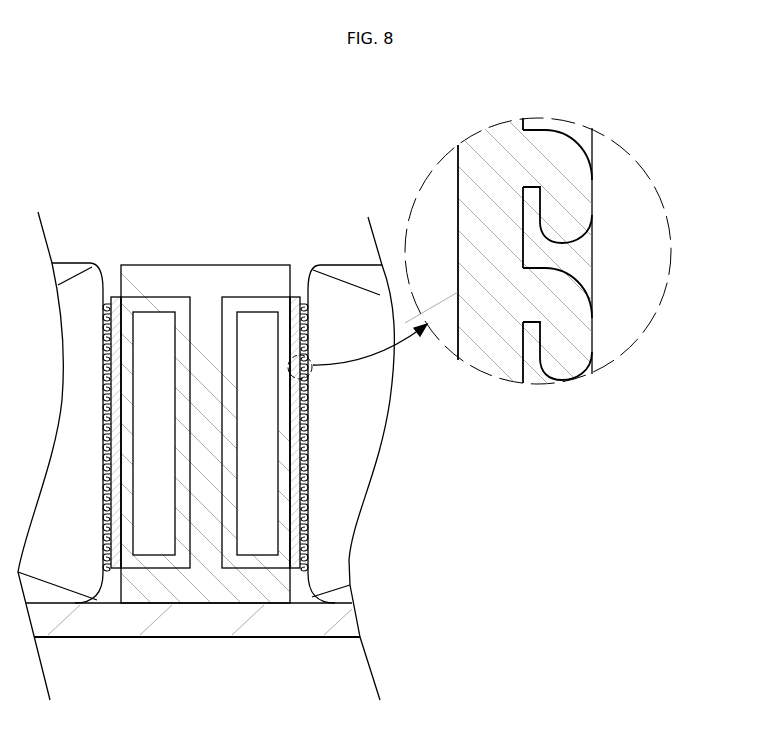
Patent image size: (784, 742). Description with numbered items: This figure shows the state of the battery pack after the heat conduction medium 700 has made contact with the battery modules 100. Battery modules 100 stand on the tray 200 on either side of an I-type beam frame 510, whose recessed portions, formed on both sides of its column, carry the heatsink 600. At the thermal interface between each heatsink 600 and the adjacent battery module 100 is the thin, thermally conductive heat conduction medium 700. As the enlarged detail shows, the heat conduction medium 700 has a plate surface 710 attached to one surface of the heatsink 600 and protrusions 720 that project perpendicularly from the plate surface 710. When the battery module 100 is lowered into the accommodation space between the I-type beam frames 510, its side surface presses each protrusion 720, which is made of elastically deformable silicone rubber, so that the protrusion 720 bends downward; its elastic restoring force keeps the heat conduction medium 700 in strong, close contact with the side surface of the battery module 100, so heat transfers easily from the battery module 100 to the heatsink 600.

The battery module 100 is at (65, 263).
The tray 200 is at (242, 627).
The I-type beam frame 510 is at (152, 586).
The heatsink 600 is at (251, 308).
The heat conduction medium 700 is at (113, 577).
The plate surface 710 is at (488, 150).
The protrusion 720 is at (570, 188).